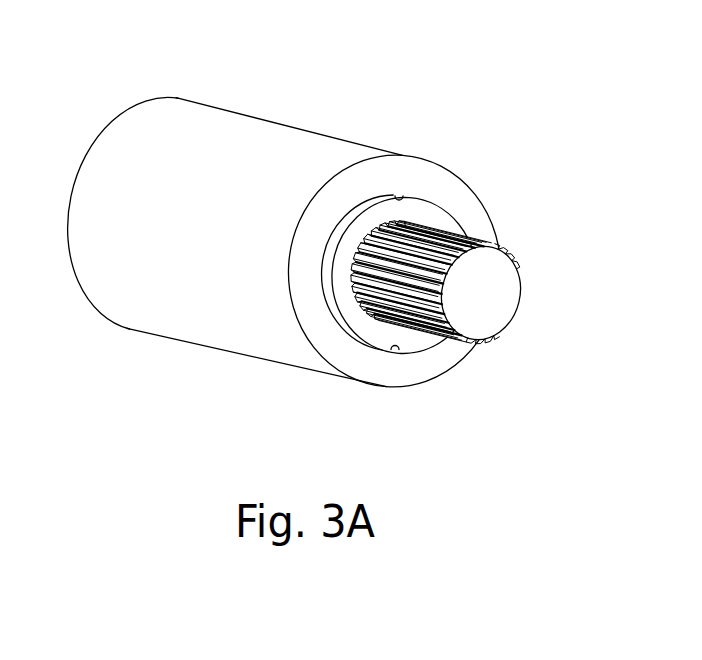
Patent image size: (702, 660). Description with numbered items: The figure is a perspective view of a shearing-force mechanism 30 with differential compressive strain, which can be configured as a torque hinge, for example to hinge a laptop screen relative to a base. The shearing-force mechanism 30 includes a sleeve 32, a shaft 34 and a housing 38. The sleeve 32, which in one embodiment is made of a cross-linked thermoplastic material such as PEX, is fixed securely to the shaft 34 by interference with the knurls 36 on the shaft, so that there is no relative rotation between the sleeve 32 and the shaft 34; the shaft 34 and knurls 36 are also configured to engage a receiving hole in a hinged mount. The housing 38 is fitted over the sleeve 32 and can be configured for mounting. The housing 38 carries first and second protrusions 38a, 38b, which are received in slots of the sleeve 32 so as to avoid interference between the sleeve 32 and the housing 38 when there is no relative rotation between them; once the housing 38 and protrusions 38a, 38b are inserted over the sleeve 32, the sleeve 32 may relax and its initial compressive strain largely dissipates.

The shearing-force mechanism 30 is at (326, 230).
The sleeve 32 is at (445, 225).
The shaft 34 is at (493, 301).
The knurls 36 is at (433, 253).
The housing 38 is at (301, 244).
The first protrusion 38a is at (402, 196).
The second protrusion 38b is at (397, 352).